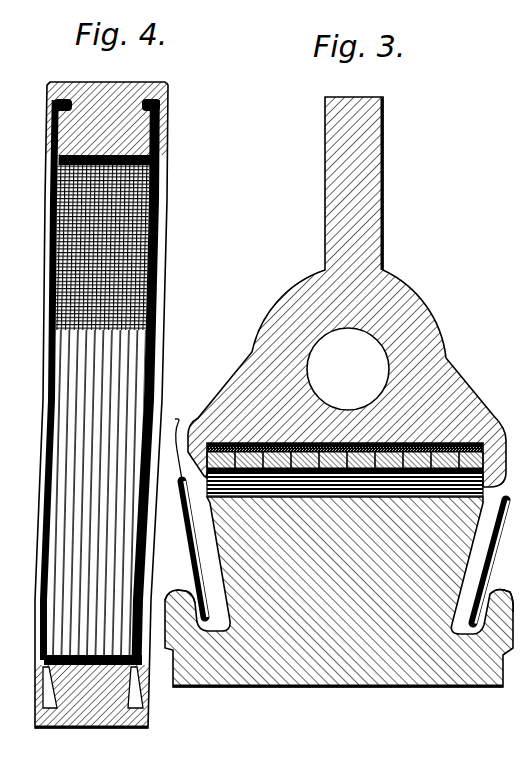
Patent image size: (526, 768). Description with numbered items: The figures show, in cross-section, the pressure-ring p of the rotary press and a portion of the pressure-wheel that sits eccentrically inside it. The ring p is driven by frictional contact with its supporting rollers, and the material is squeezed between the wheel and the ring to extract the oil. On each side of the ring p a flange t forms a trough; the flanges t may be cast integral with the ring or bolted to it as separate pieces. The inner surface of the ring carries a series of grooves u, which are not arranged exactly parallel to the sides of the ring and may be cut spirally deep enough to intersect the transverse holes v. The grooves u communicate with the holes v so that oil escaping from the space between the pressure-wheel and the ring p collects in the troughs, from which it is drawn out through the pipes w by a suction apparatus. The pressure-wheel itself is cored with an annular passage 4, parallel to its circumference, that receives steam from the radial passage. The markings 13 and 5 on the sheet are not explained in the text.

In FIG. 4, the flange t is at (46, 112).
In FIG. 3, the flange t is at (184, 592).
In FIG. 4, the groove u is at (152, 297).
In FIG. 3, the groove u is at (331, 445).
In FIG. 4, the transverse hole v is at (44, 661).
In FIG. 3, the transverse hole v is at (485, 488).
In FIG. 4, the pressure-ring p is at (108, 720).
In FIG. 3, the pressure-ring p is at (349, 678).
In FIG. 3, the annular passage 4 is at (348, 369).
In FIG. 3, the head block 13 is at (478, 445).
In FIG. 3, the pipe w is at (349, 466).
In FIG. 3, the pin rod 5 is at (345, 552).